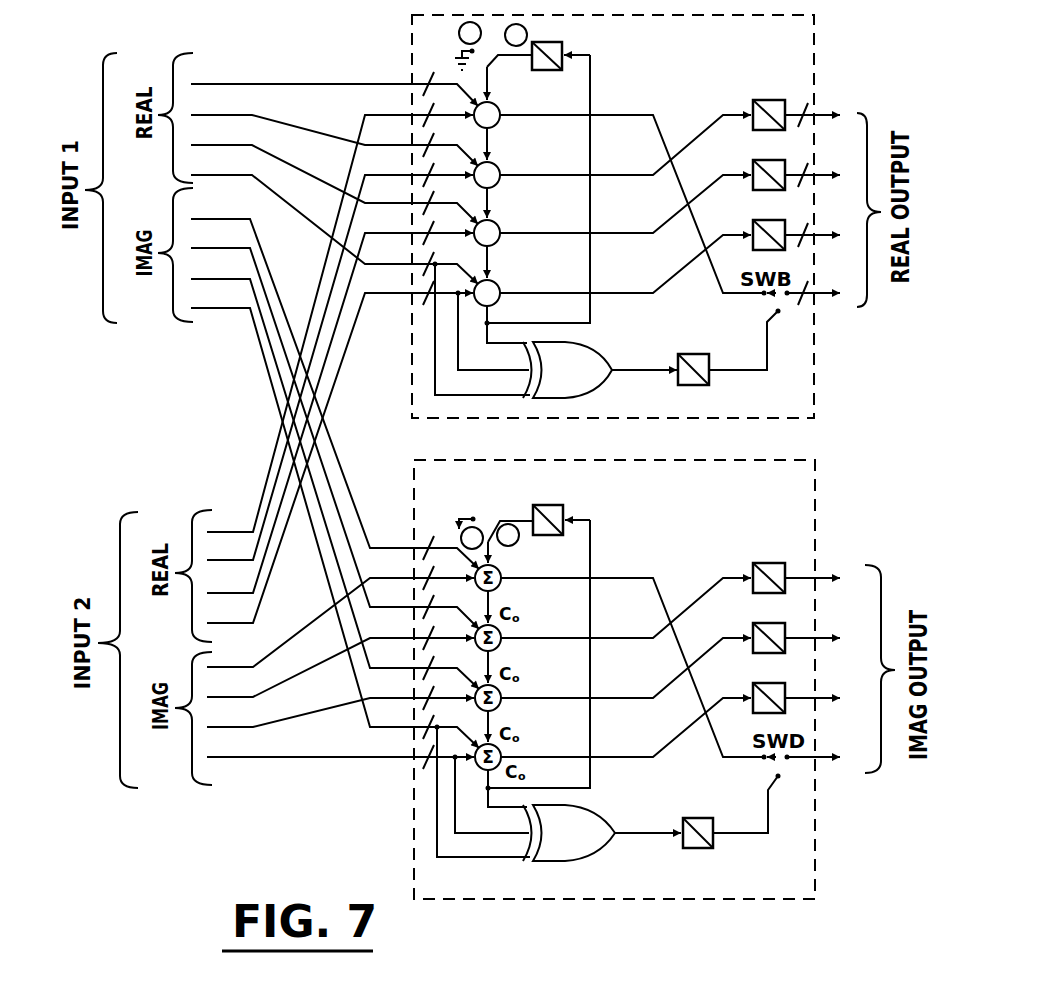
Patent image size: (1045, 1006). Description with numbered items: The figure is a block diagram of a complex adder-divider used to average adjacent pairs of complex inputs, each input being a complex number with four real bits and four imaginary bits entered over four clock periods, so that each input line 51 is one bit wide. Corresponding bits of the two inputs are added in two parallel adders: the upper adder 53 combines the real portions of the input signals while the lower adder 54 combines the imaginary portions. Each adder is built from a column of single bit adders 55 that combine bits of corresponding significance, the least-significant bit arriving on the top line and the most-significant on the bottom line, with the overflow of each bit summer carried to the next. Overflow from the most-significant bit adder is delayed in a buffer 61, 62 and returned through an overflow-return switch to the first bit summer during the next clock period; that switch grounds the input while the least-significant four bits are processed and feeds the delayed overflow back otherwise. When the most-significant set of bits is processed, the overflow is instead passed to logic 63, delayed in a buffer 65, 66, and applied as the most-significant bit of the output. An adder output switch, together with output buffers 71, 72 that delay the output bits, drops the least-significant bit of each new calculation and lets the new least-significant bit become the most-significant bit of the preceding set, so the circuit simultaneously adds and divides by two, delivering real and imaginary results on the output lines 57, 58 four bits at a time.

The input line 51 is at (263, 117).
The parallel adder 53 is at (805, 347).
The parallel adder 54 is at (765, 506).
The single bit adder 55 is at (500, 182).
The output line 57 is at (825, 168).
The output line 58 is at (816, 698).
The buffer 61 is at (562, 22).
The buffer 62 is at (552, 512).
The logic 63 is at (585, 356).
The buffer 65 is at (694, 355).
The buffer 66 is at (699, 819).
The output buffer 71 is at (772, 162).
The output buffer 72 is at (755, 623).